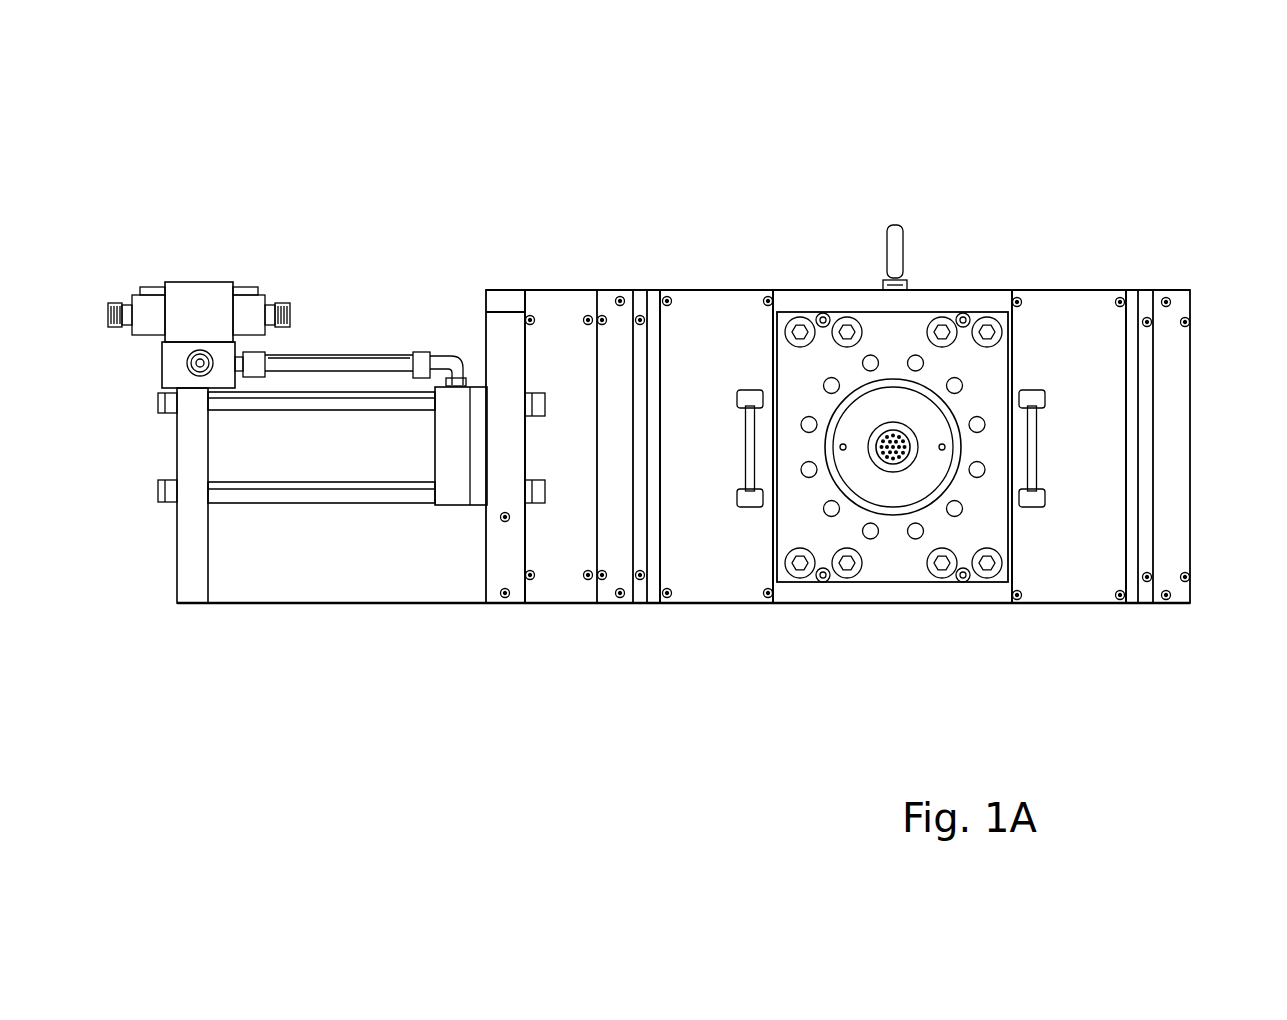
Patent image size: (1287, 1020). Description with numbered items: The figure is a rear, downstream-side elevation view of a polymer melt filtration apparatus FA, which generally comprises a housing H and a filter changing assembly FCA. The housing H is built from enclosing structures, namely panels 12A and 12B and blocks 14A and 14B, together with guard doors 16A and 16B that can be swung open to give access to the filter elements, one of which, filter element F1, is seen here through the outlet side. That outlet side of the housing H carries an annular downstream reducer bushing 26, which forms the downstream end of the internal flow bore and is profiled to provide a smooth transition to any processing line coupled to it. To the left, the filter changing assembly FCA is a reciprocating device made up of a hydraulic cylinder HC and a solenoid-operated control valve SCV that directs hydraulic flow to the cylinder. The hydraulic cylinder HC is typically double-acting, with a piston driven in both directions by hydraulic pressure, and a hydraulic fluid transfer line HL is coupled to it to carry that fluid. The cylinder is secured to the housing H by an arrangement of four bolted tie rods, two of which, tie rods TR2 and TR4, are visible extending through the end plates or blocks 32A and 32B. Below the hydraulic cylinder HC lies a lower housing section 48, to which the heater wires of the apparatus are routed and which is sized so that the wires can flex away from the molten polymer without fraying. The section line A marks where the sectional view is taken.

The filter changing assembly FCA is at (229, 212).
The solenoid-operated control valve SCV is at (192, 282).
The hydraulic fluid transfer line HL is at (327, 350).
The hydraulic cylinder HC is at (275, 529).
The tie rod TR2 is at (247, 410).
The tie rod TR4 is at (247, 484).
The end plate 32A is at (452, 500).
The end plate 32B is at (192, 500).
The lower housing section 48 is at (350, 605).
The section line A- A is at (482, 290).
The block 14B is at (603, 290).
The block 14A is at (1172, 290).
The guard door 16A is at (720, 577).
The guard door 16B is at (1097, 432).
The panel 12A is at (1062, 290).
The panel 12B is at (1080, 606).
The housing H is at (978, 203).
The filtration apparatus FA is at (1138, 162).
The downstream reducer bushing 26 is at (872, 492).
The filter element F1 is at (893, 465).